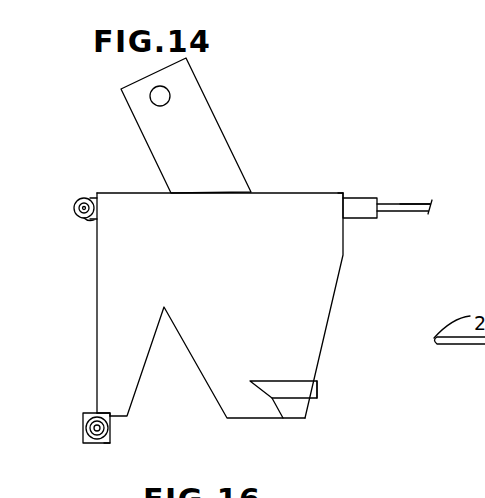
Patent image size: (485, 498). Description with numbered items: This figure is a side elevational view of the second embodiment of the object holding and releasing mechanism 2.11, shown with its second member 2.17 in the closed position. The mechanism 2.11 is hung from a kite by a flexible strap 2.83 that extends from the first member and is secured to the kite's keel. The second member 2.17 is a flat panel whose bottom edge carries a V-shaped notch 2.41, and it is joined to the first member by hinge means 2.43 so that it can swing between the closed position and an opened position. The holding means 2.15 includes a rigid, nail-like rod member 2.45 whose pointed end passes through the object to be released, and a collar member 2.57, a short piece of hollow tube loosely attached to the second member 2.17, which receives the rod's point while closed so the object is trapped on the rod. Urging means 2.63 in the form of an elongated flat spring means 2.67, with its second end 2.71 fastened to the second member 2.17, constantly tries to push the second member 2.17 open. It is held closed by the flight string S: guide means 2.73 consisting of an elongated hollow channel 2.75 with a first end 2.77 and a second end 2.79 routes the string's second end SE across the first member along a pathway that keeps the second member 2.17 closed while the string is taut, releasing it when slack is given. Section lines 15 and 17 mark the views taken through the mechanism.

In FIG. 14, the object holding and releasing mechanism 2.11 is at (299, 87).
In FIG. 16, the object holding and releasing mechanism 2.11 is at (313, 497).
In FIG. 14, the second member 2.17 is at (95, 282).
In FIG. 14, the hinge means 2.43 is at (347, 230).
In FIG. 14, the V-shaped notch 2.41 is at (152, 388).
In FIG. 14, the flexible strap 2.83 is at (218, 145).
In FIG. 14, the second end 2.79 is at (93, 172).
In FIG. 14, the second end SE is at (83, 217).
In FIG. 14, the rod member 2.45 is at (85, 428).
In FIG. 14, the holding means 2.15 is at (115, 430).
In FIG. 14, the collar member 2.57 is at (108, 445).
In FIG. 14, the section line 15 is at (100, 413).
In FIG. 14, the section line 17 is at (250, 390).
In FIG. 14, the guide means 2.73 is at (348, 190).
In FIG. 14, the hollow channel 2.75 is at (402, 176).
In FIG. 14, the first end 2.77 is at (367, 210).
In FIG. 14, the flight string S is at (410, 205).
In FIG. 14, the spring means 2.67 is at (372, 371).
In FIG. 14, the urging means 2.63 is at (322, 380).
In FIG. 14, the second end 2.71 is at (278, 395).